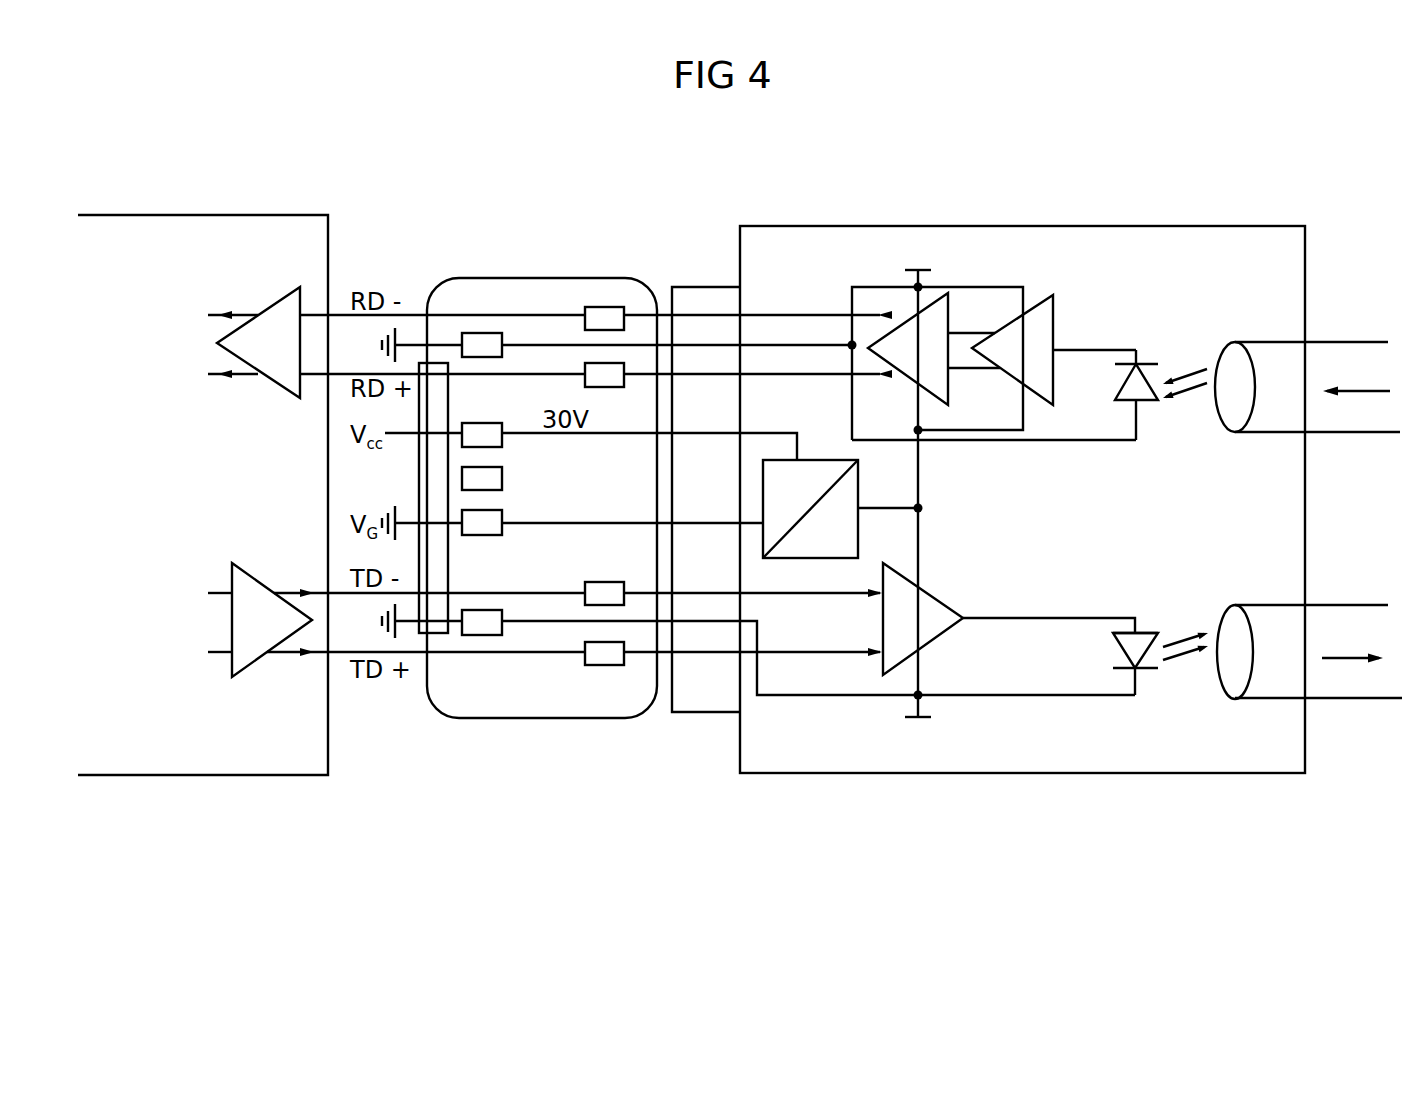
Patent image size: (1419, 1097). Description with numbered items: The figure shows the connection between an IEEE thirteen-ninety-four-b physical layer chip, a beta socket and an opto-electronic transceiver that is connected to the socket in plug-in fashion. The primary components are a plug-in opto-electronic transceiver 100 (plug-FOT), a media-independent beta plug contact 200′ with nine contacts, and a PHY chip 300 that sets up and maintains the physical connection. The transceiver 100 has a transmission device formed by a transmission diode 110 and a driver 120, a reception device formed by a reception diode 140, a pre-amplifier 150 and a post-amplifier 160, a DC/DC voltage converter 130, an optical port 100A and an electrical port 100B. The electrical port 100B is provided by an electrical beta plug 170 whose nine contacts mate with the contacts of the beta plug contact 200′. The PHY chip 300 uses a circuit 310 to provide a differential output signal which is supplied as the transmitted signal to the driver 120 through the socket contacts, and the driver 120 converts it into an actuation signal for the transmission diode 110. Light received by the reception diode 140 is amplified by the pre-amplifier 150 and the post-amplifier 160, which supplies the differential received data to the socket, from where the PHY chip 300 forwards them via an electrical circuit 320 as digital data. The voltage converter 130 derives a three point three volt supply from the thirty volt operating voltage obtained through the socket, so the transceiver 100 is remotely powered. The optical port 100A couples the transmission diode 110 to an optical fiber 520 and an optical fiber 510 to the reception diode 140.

The plug-in opto-electronic transceiver 100 is at (1040, 773).
The optical port 100A is at (1332, 290).
The electrical port 100B is at (713, 255).
The transmission diode 110 is at (1137, 643).
The driver 120 is at (925, 613).
The voltage converter 130 is at (848, 497).
The reception diode 140 is at (1140, 390).
The pre-amplifier 150 is at (1038, 338).
The post-amplifier 160 is at (935, 327).
The 1394b beta plug 170 is at (700, 695).
The 1394b beta plug contact 200′ is at (543, 718).
The PHY chip 300 is at (203, 775).
The circuit 310 is at (247, 647).
The electrical circuit 320 is at (287, 365).
The optical fiber 510 is at (1353, 422).
The optical fiber 520 is at (1342, 682).